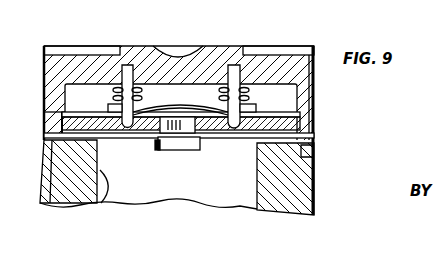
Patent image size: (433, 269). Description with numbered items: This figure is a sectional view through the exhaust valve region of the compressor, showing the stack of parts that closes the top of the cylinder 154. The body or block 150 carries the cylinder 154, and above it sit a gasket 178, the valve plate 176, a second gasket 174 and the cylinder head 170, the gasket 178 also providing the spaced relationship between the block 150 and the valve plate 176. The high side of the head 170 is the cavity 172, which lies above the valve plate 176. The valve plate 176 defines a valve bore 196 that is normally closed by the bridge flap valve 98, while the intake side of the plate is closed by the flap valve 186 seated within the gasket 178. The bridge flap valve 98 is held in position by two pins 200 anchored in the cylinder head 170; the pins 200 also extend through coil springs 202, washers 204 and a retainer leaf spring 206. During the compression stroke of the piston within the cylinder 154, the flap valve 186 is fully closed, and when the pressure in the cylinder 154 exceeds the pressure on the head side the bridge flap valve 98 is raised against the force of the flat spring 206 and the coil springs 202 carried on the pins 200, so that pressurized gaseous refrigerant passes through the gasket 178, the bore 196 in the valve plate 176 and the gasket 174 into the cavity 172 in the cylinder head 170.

The terminal 98 is at (180, 140).
The block 150 is at (300, 185).
The cylinder 154 is at (97, 203).
The cylinder head 170 is at (313, 56).
The cavity 172 is at (298, 93).
The gasket 174 is at (302, 116).
The valve plate 176 is at (305, 128).
The gasket 178 is at (312, 152).
The flap valve 186 is at (212, 140).
The valve bore 196 is at (167, 140).
The pins 200 is at (127, 64).
The coil springs 202 is at (140, 92).
The washers 204 is at (115, 108).
The retainer leaf spring 206 is at (198, 102).